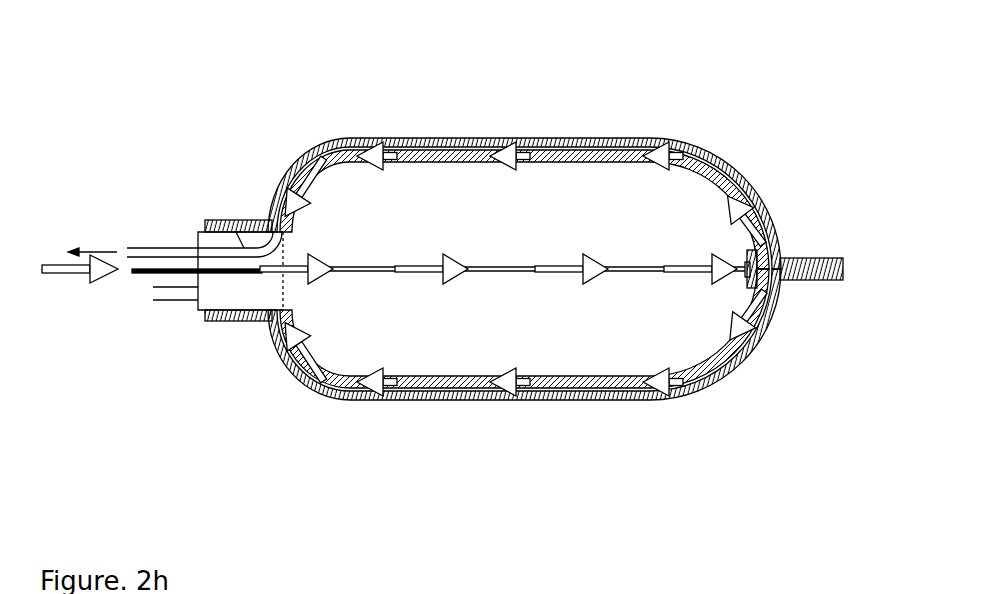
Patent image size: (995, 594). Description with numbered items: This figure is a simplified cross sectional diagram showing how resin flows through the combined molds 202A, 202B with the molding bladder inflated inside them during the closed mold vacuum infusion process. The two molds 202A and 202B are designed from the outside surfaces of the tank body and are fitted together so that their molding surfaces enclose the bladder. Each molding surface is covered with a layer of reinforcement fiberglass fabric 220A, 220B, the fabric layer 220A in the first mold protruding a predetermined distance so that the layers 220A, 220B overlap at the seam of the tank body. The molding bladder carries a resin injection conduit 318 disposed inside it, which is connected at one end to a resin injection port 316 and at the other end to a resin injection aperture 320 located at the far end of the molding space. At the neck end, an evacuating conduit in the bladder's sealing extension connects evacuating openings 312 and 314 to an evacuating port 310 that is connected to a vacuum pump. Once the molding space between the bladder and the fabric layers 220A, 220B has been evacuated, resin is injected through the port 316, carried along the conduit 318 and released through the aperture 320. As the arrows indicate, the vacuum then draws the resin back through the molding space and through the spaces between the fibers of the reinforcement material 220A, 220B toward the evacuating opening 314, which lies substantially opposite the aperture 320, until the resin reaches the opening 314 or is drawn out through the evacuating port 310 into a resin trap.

The mold 202B is at (500, 138).
The mold 202A is at (592, 400).
The fabric layer 220B is at (575, 150).
The fabric layer 220A is at (466, 388).
The evacuating port 310 is at (127, 248).
The evacuating opening 312 is at (223, 231).
The evacuating opening 314 is at (270, 216).
The resin injection port 316 is at (140, 276).
The resin injection conduit 318 is at (373, 277).
The resin injection aperture 320 is at (768, 268).